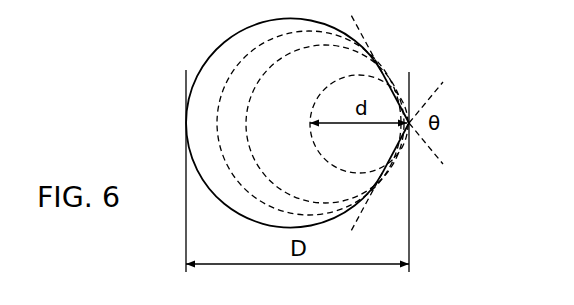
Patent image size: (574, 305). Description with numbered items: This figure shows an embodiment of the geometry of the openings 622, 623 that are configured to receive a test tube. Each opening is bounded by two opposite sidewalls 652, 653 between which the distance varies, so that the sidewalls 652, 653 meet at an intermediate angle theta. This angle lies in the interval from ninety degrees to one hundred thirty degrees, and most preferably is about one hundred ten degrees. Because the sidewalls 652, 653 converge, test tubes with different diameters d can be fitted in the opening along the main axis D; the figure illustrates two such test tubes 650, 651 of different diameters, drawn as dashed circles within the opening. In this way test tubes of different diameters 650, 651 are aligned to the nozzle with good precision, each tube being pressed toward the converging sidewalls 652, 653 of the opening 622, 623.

The opening 622 is at (219, 122).
The opening 623 is at (186, 127).
The test tube with different diameter 650 is at (230, 82).
The test tube with different diameter 651 is at (273, 63).
The sidewall 652 is at (370, 55).
The sidewall 653 is at (382, 173).